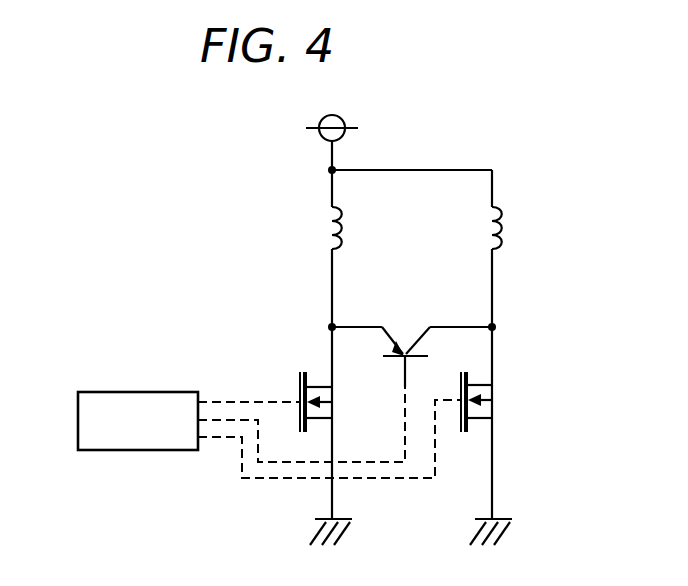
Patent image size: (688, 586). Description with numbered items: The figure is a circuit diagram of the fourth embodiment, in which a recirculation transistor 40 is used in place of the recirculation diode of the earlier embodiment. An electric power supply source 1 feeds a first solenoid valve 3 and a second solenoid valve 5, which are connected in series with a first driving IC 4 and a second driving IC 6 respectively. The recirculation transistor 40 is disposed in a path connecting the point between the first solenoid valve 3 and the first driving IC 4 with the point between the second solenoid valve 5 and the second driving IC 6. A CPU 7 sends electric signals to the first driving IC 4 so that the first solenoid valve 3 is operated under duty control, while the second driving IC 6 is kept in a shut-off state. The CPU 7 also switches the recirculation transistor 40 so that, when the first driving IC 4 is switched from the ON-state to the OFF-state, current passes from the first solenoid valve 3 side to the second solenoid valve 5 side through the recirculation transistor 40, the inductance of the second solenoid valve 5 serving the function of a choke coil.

The electric power supply source 1 is at (342, 117).
The first solenoid valve 3 is at (332, 219).
The second solenoid valve 5 is at (500, 223).
The recirculation transistor 40 is at (412, 325).
The first driving IC 4 is at (299, 382).
The second driving IC 6 is at (493, 400).
The CPU 7 is at (140, 452).